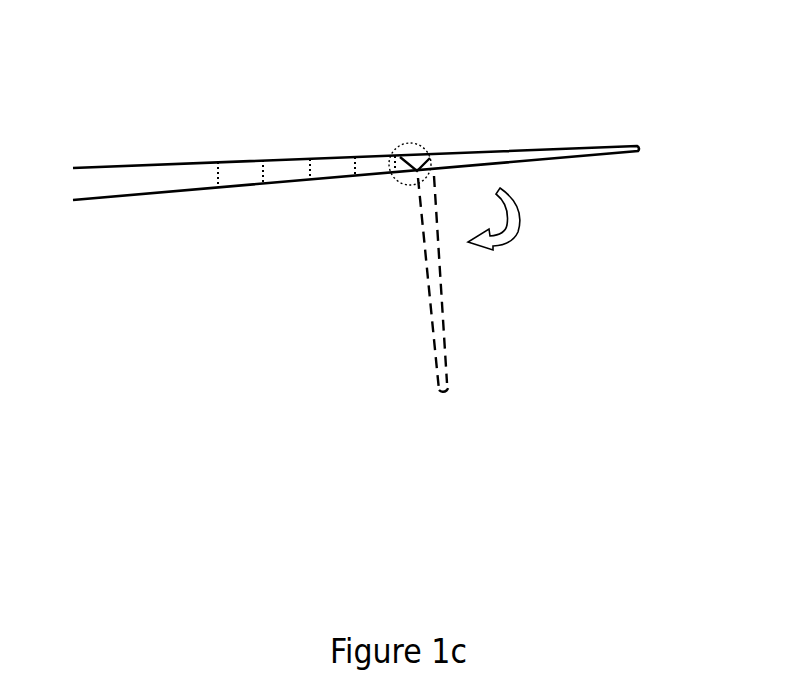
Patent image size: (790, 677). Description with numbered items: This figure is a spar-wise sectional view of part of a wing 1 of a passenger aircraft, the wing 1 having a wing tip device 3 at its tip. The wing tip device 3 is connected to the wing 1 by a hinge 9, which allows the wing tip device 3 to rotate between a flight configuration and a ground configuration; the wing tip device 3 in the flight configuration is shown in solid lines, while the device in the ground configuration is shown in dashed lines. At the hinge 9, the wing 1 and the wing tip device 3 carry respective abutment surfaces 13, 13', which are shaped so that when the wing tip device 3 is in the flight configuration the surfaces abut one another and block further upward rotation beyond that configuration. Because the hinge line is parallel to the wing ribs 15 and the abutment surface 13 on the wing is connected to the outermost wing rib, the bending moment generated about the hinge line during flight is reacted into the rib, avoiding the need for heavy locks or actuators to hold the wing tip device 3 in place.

The wing 1 is at (227, 97).
The wing tip device 3 is at (551, 131).
The hinge 9 is at (396, 199).
The abutment surface 13 is at (379, 210).
The abutment surface 13' is at (470, 211).
The wing ribs 15 is at (329, 200).